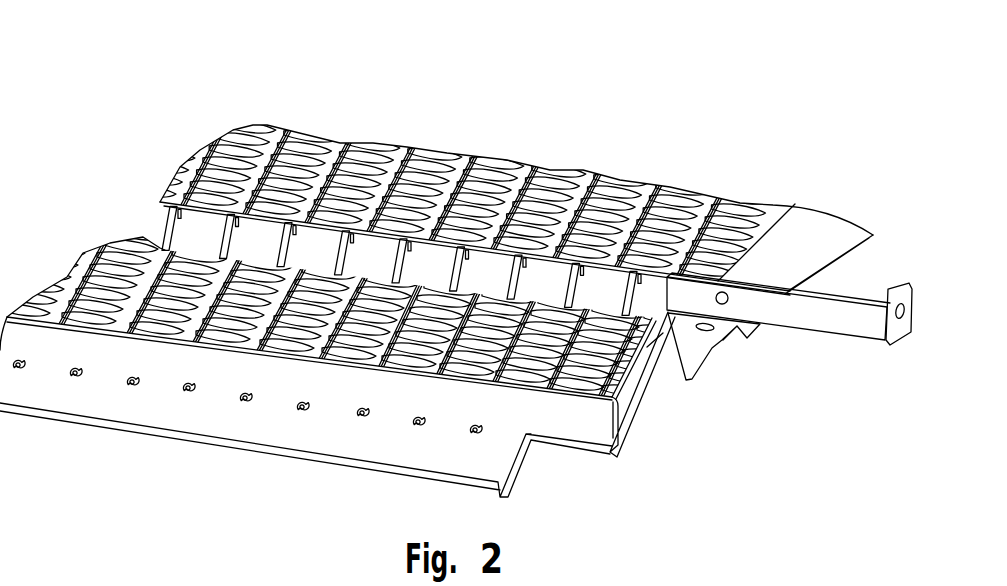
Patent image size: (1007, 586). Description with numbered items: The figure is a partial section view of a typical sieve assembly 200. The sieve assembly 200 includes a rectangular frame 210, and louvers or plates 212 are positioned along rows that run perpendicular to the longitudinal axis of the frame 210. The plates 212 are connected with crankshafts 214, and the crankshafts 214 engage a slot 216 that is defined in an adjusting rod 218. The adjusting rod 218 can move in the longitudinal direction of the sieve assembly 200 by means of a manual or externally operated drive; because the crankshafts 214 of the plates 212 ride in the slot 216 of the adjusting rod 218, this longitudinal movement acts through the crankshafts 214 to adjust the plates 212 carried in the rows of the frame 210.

The sieve assembly 200 is at (168, 95).
The rectangular frame 210 is at (215, 413).
The louvers or plates 212 is at (582, 197).
The crankshafts 214 is at (640, 280).
The slot 216 is at (642, 284).
The adjusting rod 218 is at (847, 323).